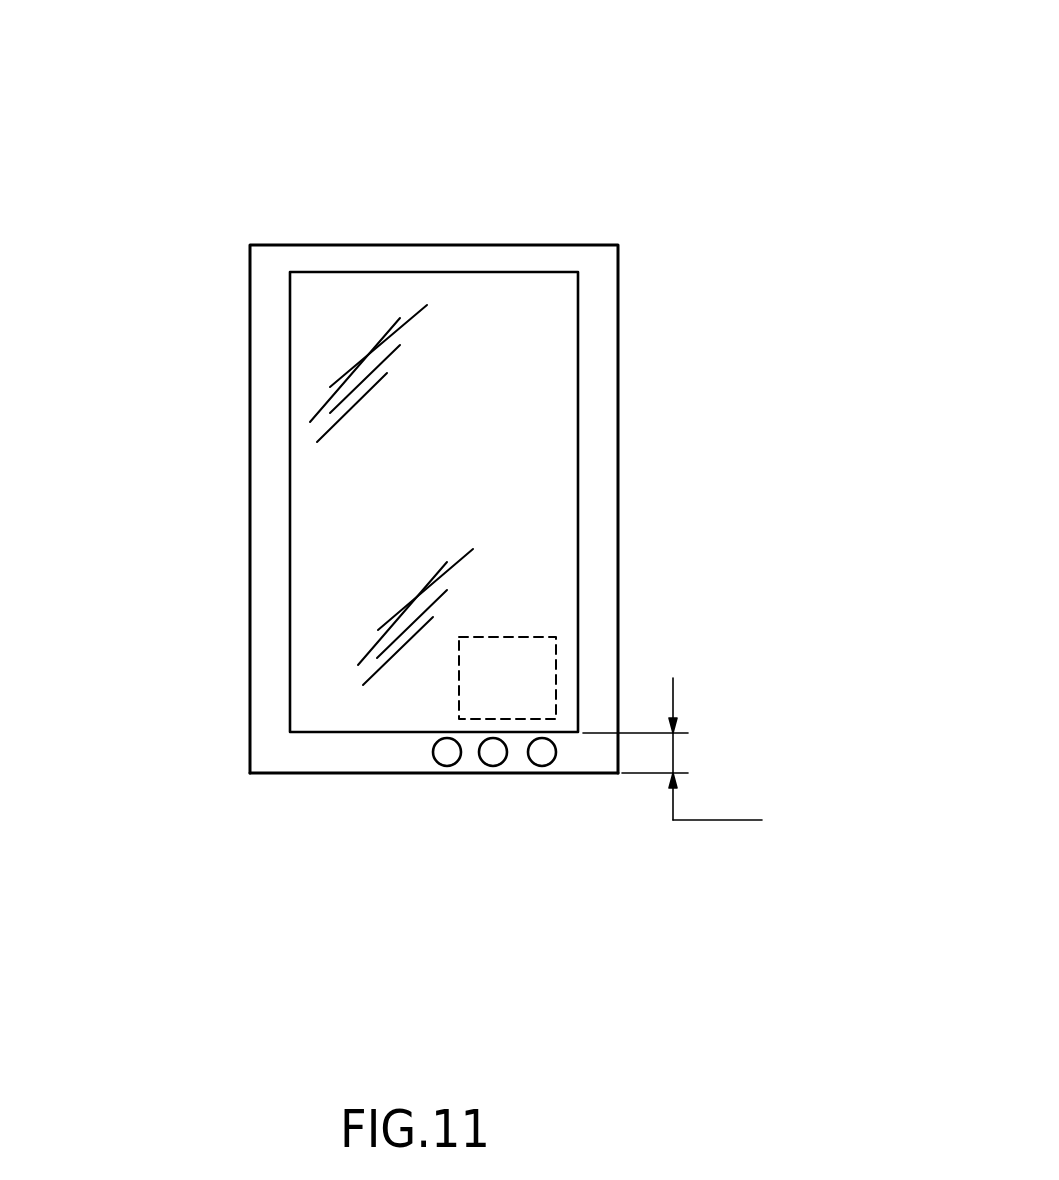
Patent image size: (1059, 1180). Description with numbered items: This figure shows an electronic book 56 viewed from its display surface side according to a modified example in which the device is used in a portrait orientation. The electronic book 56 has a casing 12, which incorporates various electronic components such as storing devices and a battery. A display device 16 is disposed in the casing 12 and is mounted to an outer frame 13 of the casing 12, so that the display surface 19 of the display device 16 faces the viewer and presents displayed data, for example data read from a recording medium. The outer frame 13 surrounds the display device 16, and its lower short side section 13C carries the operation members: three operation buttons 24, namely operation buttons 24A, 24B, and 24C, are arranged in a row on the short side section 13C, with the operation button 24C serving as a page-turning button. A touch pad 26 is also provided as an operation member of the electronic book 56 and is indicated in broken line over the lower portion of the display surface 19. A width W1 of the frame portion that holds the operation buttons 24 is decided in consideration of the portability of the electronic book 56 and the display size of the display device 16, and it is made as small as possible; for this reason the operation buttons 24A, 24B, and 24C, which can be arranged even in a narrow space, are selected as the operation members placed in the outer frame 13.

The electronic book 56 is at (385, 110).
The casing 12 is at (579, 243).
The outer frame 13 is at (249, 608).
The short side section 13C is at (298, 757).
The display device 16 is at (331, 272).
The display surface 19 is at (448, 293).
The touch pad 26 is at (558, 655).
The operation button 24 is at (577, 853).
The operation button 24A is at (536, 760).
The operation button 24B is at (487, 760).
The operation button 24C is at (441, 760).
The width W1 is at (672, 749).